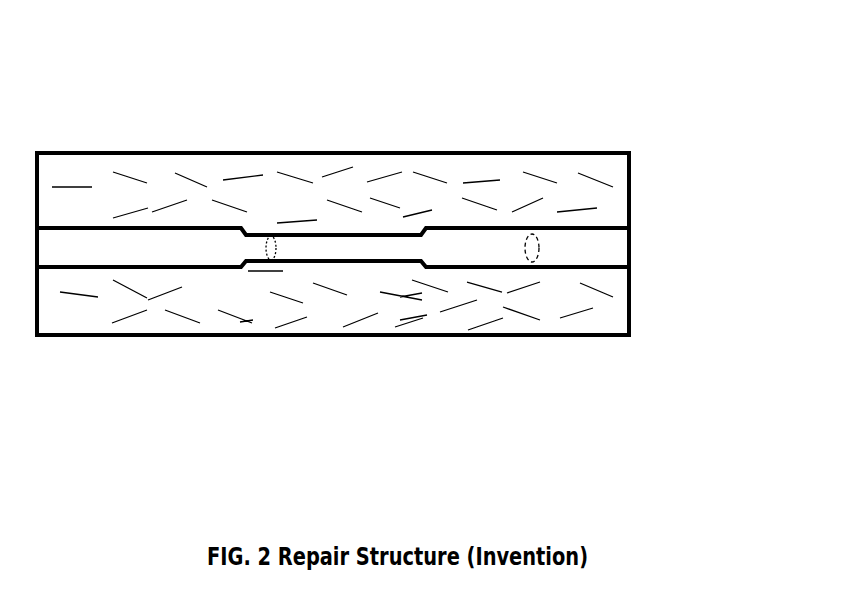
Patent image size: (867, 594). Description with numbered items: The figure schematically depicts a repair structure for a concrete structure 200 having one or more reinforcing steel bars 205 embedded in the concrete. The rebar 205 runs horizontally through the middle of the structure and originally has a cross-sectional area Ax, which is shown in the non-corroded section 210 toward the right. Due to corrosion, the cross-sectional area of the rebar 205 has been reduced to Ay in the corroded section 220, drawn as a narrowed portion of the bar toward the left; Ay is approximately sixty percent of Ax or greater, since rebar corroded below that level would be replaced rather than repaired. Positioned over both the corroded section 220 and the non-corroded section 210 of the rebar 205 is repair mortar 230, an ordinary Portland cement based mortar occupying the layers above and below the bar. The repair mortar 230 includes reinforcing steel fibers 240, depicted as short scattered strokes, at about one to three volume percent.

The concrete structure 200 is at (643, 203).
The reinforcing steel bar 205 is at (612, 250).
The non-corroded section 210 is at (577, 256).
The corroded section 220 is at (383, 245).
The repair mortar 230 is at (205, 170).
The reinforcing steel fibers 240 is at (85, 182).